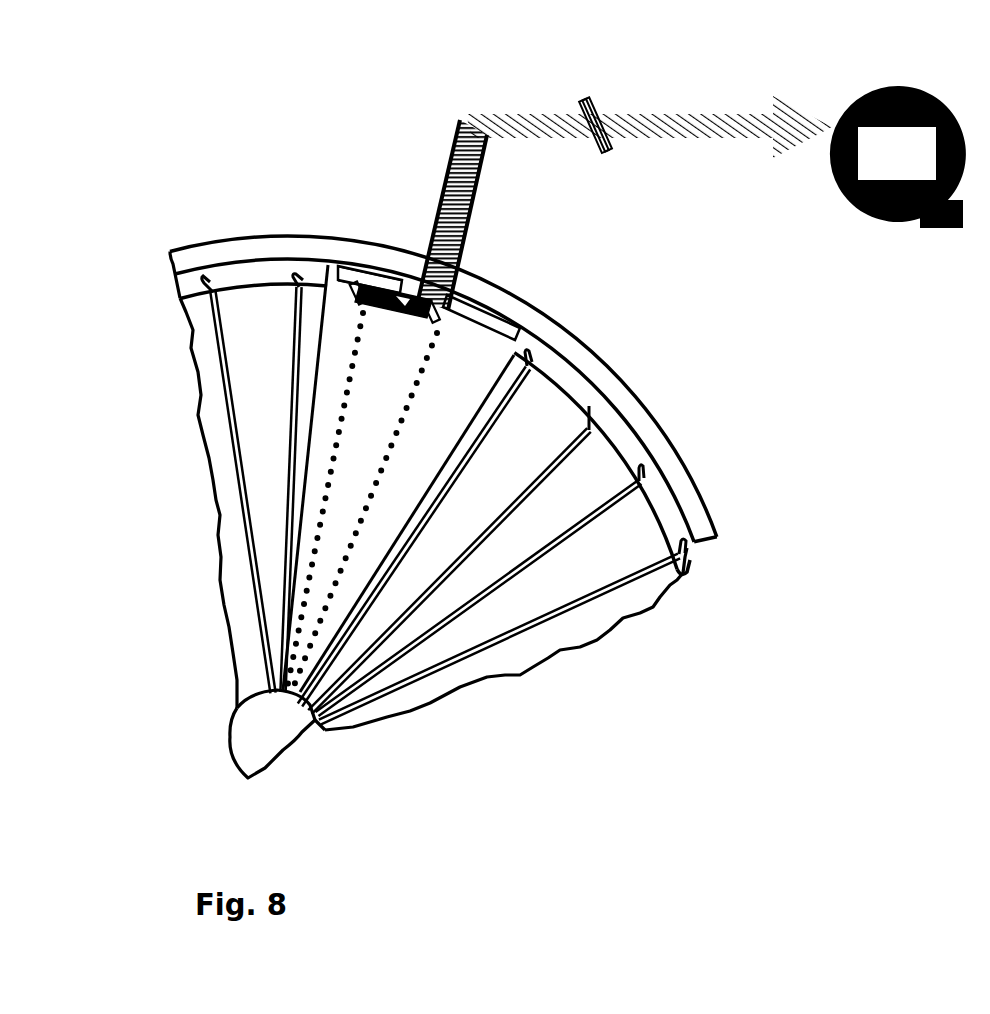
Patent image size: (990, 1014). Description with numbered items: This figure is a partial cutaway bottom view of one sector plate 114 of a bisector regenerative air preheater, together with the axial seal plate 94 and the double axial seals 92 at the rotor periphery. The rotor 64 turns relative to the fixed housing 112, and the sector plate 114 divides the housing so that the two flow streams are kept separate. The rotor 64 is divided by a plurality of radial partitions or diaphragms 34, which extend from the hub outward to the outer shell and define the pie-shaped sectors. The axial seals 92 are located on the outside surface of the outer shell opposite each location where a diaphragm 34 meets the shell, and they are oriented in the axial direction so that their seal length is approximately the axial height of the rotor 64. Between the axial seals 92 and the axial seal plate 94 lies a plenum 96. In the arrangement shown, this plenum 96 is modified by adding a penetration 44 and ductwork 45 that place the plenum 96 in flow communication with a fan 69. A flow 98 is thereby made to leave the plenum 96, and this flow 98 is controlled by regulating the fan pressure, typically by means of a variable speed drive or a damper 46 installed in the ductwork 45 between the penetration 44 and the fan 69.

The diaphragm 34 is at (238, 517).
The penetration 44 is at (441, 287).
The ductwork 45 is at (452, 156).
The damper 46 is at (598, 98).
The rotor 64 is at (655, 507).
The fan 69 is at (898, 157).
The axial seal 92 is at (455, 306).
The axial seal plate 94 is at (356, 265).
The plenum 96 is at (409, 280).
The flow 98 is at (462, 183).
The fixed housing 112 is at (637, 430).
The sector plate 114 is at (362, 500).